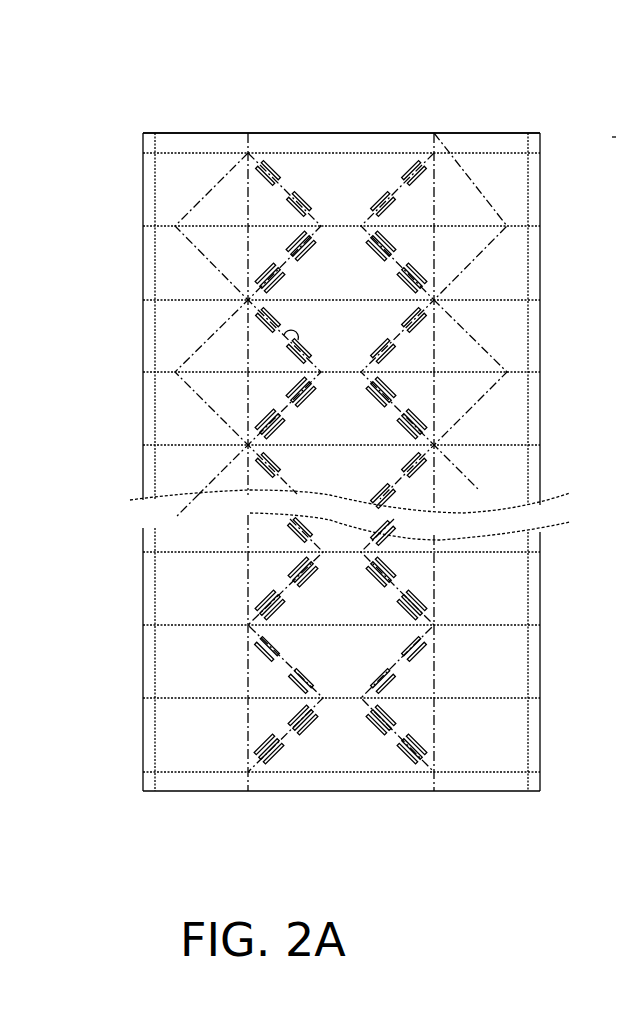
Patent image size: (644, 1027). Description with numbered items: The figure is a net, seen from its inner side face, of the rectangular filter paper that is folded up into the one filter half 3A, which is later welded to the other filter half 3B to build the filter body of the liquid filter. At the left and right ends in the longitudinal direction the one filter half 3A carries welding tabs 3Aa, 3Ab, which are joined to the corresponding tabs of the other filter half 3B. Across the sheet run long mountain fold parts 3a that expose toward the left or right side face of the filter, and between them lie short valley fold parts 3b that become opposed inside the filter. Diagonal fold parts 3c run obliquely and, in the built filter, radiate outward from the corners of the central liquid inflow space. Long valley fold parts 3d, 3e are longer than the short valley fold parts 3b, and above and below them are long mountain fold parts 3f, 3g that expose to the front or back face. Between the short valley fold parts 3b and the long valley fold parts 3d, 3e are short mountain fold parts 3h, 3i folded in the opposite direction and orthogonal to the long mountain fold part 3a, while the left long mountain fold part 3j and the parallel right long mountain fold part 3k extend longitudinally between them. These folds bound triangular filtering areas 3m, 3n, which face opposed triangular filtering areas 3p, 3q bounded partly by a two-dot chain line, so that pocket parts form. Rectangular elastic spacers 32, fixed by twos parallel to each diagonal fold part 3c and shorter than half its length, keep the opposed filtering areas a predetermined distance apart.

The one filter half 3A is at (377, 100).
The other filter half 3B is at (628, 125).
The welding tab 3Aa is at (148, 433).
The welding tab 3Ab is at (536, 332).
The long mountain fold part 3a is at (288, 333).
The short valley fold part 3b is at (327, 200).
The diagonal fold part 3c is at (275, 200).
The long valley fold part 3d is at (193, 223).
The long valley fold part 3e is at (440, 250).
The long mountain fold part 3f is at (180, 447).
The long mountain fold part 3g is at (243, 417).
The short mountain fold part 3h is at (250, 253).
The short mountain fold part 3i is at (381, 243).
The left long mountain fold part 3j is at (215, 202).
The right long mountain fold part 3k is at (478, 223).
The triangular filtering area 3m is at (280, 205).
The triangular filtering area 3n is at (272, 250).
The triangular filtering area 3p is at (212, 202).
The triangular filtering area 3q is at (220, 242).
The spacer 32 is at (262, 668).